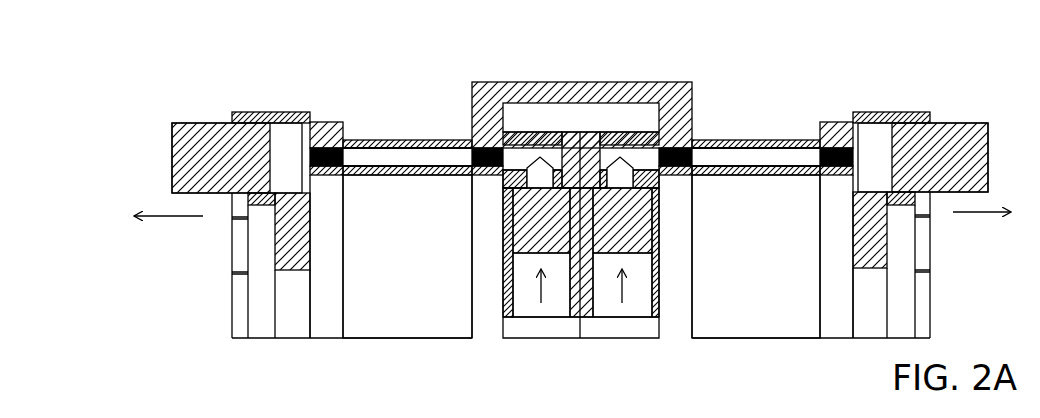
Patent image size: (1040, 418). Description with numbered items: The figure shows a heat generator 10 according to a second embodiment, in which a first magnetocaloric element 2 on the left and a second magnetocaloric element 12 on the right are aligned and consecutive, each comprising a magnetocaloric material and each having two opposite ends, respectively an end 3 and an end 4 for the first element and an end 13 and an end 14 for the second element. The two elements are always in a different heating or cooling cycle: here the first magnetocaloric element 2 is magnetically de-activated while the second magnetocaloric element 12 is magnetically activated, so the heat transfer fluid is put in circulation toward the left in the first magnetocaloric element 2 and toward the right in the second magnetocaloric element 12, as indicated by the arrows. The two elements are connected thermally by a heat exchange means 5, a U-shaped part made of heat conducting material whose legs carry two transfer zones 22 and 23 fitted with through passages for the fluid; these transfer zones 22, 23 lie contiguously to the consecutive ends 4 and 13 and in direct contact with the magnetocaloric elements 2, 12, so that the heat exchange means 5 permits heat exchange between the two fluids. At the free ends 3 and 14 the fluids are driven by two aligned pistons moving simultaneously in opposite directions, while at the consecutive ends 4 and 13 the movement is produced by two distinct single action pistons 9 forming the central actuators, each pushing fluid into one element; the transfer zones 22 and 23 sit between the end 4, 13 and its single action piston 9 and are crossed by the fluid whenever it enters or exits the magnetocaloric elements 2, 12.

The heat generator 10 is at (110, 93).
The first magnetocaloric element 2 is at (403, 157).
The end 3 is at (348, 148).
The end 4 is at (463, 148).
The heat exchange means 5 is at (707, 99).
The single action piston 9 is at (607, 235).
The second magnetocaloric element 12 is at (775, 160).
The end 13 is at (697, 148).
The end 14 is at (818, 157).
The transfer zone 22 is at (487, 198).
The transfer zone 23 is at (678, 196).